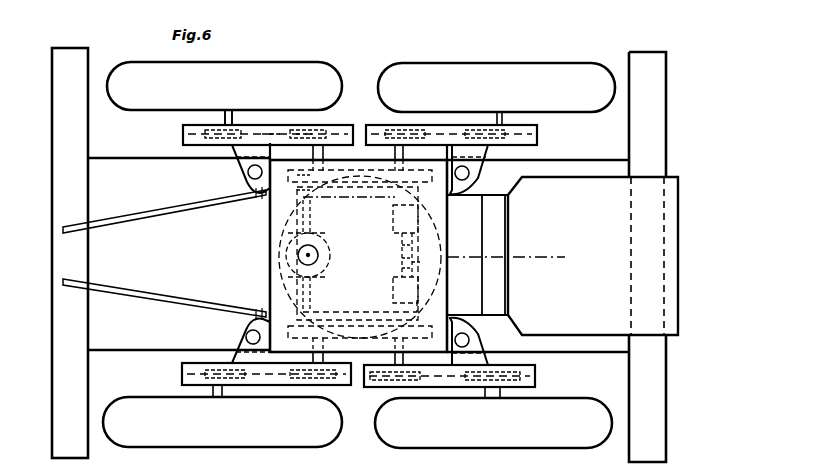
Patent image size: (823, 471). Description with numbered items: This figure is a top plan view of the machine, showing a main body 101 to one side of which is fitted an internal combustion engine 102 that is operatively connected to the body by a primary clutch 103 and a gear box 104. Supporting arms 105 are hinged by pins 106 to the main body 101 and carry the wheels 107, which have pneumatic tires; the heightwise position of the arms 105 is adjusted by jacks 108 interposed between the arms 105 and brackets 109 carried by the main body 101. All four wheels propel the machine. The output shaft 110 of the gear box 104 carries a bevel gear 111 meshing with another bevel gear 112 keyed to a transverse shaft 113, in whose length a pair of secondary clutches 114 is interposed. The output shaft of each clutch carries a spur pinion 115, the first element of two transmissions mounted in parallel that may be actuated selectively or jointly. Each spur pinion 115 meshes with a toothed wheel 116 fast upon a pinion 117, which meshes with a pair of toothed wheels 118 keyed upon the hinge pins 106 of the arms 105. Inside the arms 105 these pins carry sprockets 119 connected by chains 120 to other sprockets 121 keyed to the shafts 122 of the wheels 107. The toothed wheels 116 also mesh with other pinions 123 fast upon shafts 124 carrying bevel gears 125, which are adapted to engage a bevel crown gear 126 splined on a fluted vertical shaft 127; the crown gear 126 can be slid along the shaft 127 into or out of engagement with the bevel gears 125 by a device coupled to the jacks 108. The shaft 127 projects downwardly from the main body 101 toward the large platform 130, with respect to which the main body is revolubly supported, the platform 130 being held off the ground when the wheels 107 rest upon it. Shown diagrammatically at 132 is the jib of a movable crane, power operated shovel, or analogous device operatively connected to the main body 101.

The main body 101 is at (360, 349).
The internal combustion engine 102 is at (606, 265).
The primary clutch 103 is at (497, 278).
The gear box 104 is at (477, 267).
The supporting arms 105 is at (458, 128).
The pins 106 is at (400, 152).
The wheels 107 is at (135, 104).
The jacks 108 is at (248, 172).
The brackets 109 is at (262, 190).
The output shaft 110 is at (477, 257).
The bevel gear 111 is at (427, 262).
The bevel gear 112 is at (395, 245).
The transverse shaft 113 is at (403, 265).
The secondary clutches 114 is at (400, 215).
The spur pinion 115 is at (420, 191).
The toothed wheel 116 is at (353, 193).
The pinion 117 is at (357, 172).
The toothed wheels 118 is at (297, 175).
The sprockets 119 is at (303, 133).
The chains 120 is at (270, 133).
The sprockets 121 is at (196, 134).
The shafts 122 is at (222, 113).
The pinions 123 is at (298, 190).
The shafts 124 is at (308, 292).
The bevel gears 125 is at (292, 277).
The bevel crown gear 126 is at (322, 246).
The fluted vertical shaft 127 is at (306, 255).
The platform 130 is at (157, 341).
The jib 132 is at (152, 212).